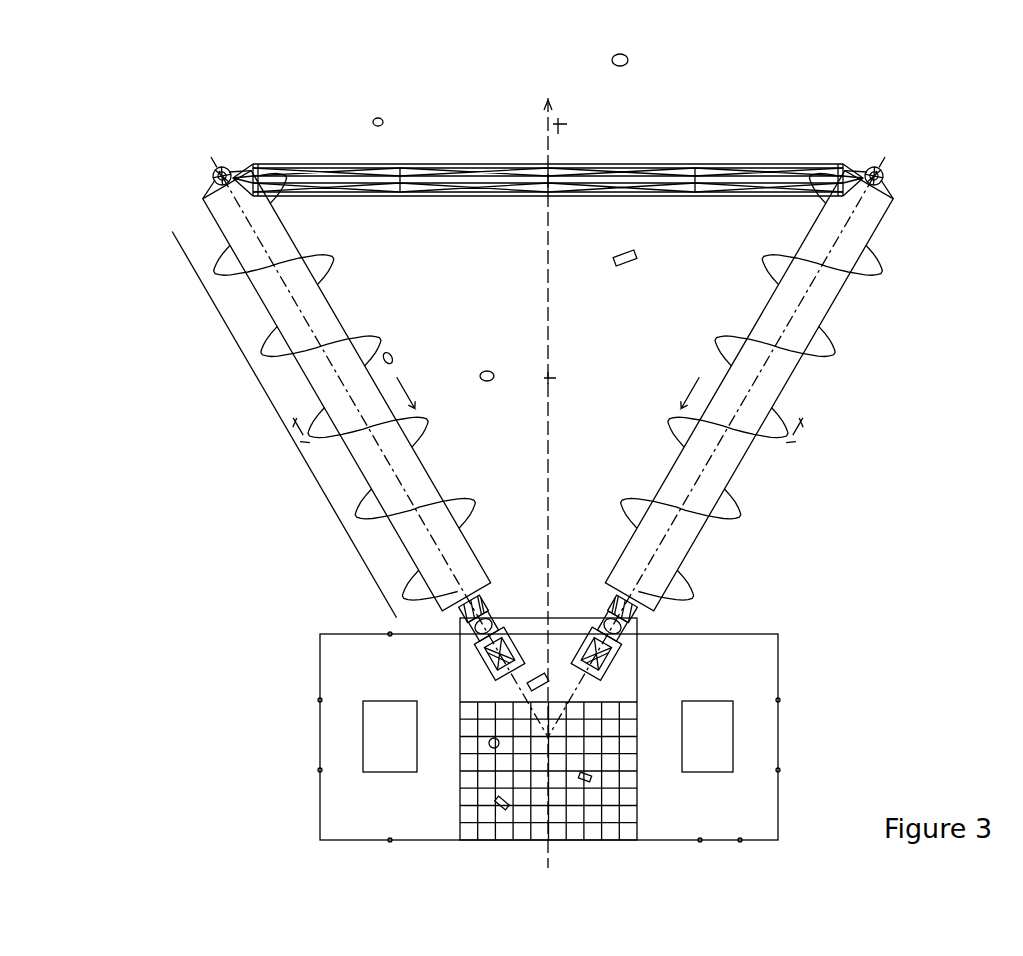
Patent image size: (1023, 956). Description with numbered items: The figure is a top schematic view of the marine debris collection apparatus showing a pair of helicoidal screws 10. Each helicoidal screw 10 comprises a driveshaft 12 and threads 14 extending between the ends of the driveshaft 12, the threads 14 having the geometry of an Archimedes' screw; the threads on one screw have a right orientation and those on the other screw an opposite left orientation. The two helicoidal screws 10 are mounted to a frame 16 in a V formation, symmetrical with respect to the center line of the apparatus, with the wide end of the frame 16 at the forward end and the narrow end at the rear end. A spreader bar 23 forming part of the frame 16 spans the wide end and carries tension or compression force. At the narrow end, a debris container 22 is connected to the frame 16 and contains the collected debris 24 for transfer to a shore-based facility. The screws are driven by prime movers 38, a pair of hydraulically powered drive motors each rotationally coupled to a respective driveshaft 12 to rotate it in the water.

The helicoidal screw 10 is at (285, 437).
The driveshaft 12 is at (787, 378).
The threads 14 is at (730, 500).
The frame 16 is at (204, 206).
The debris container 22 is at (696, 840).
The spreader bar 23 is at (737, 176).
The debris 24 is at (498, 898).
The prime movers 38 is at (490, 656).